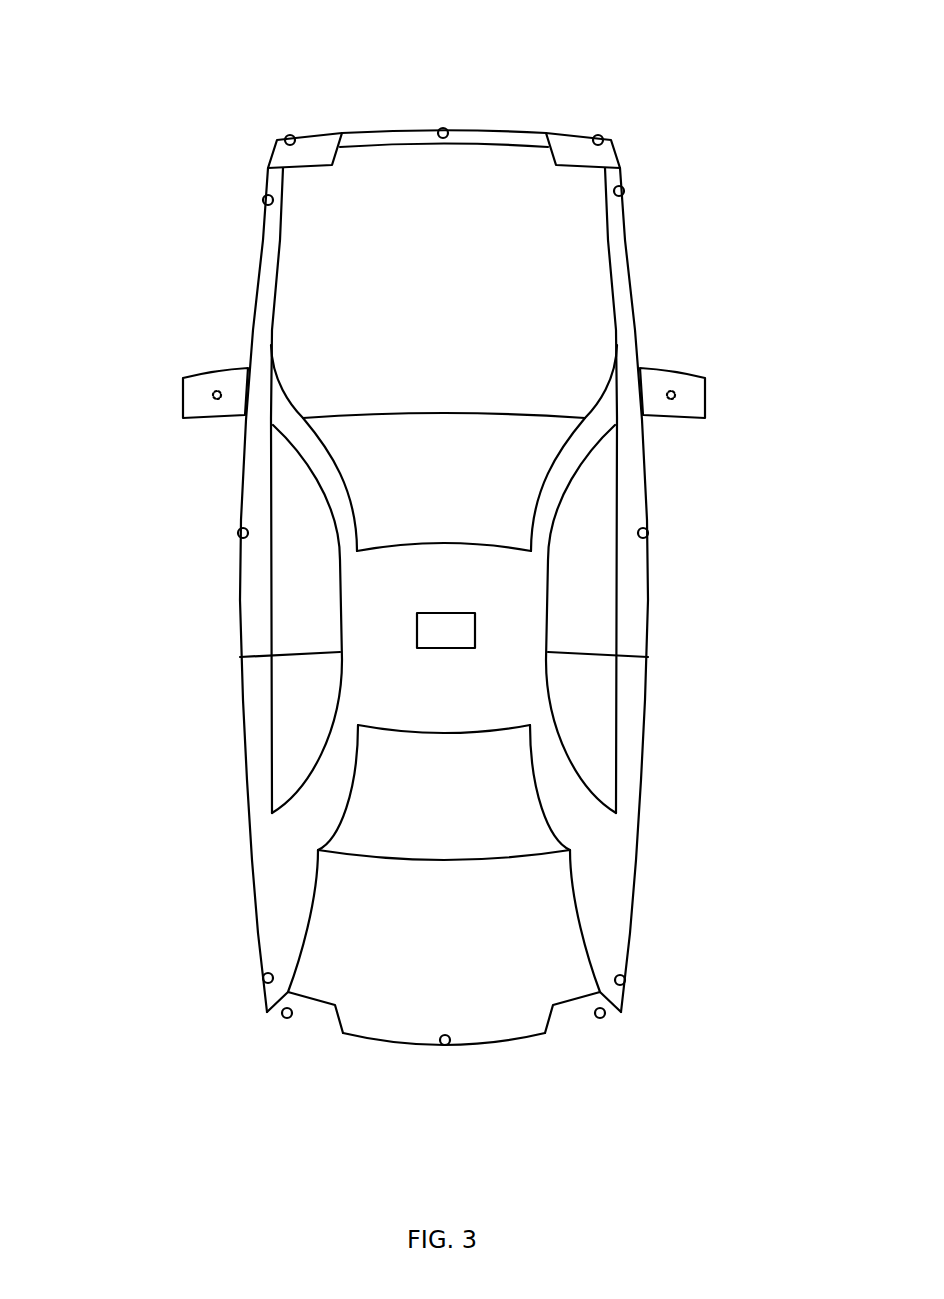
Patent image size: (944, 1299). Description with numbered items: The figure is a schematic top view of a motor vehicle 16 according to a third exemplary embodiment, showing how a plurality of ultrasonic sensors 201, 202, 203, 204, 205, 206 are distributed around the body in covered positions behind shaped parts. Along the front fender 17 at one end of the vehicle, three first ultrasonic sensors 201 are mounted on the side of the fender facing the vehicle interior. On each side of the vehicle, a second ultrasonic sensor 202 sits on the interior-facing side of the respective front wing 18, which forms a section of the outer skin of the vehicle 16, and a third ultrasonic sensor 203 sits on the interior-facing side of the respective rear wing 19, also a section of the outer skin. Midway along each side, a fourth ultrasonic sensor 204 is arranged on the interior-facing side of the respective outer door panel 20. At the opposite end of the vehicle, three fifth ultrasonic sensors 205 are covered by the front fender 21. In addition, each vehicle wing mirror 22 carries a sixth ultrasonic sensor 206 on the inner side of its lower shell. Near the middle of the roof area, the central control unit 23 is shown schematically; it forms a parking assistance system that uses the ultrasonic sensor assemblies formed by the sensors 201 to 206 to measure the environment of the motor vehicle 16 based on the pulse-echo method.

The motor vehicle 16 is at (108, 58).
The front fender 17 is at (498, 130).
The front wing 18 is at (262, 232).
The rear wing 19 is at (258, 933).
The outer door panel 20 is at (241, 492).
The front fender 21 is at (398, 1044).
The vehicle wing mirror 22 is at (196, 377).
The central control unit 23 is at (448, 650).
The first ultrasonic sensor 201 is at (284, 138).
The second ultrasonic sensor 202 is at (263, 200).
The third ultrasonic sensor 203 is at (264, 978).
The fourth ultrasonic sensor 204 is at (247, 533).
The fifth ultrasonic sensor 205 is at (266, 1016).
The sixth ultrasonic sensor 206 is at (213, 395).